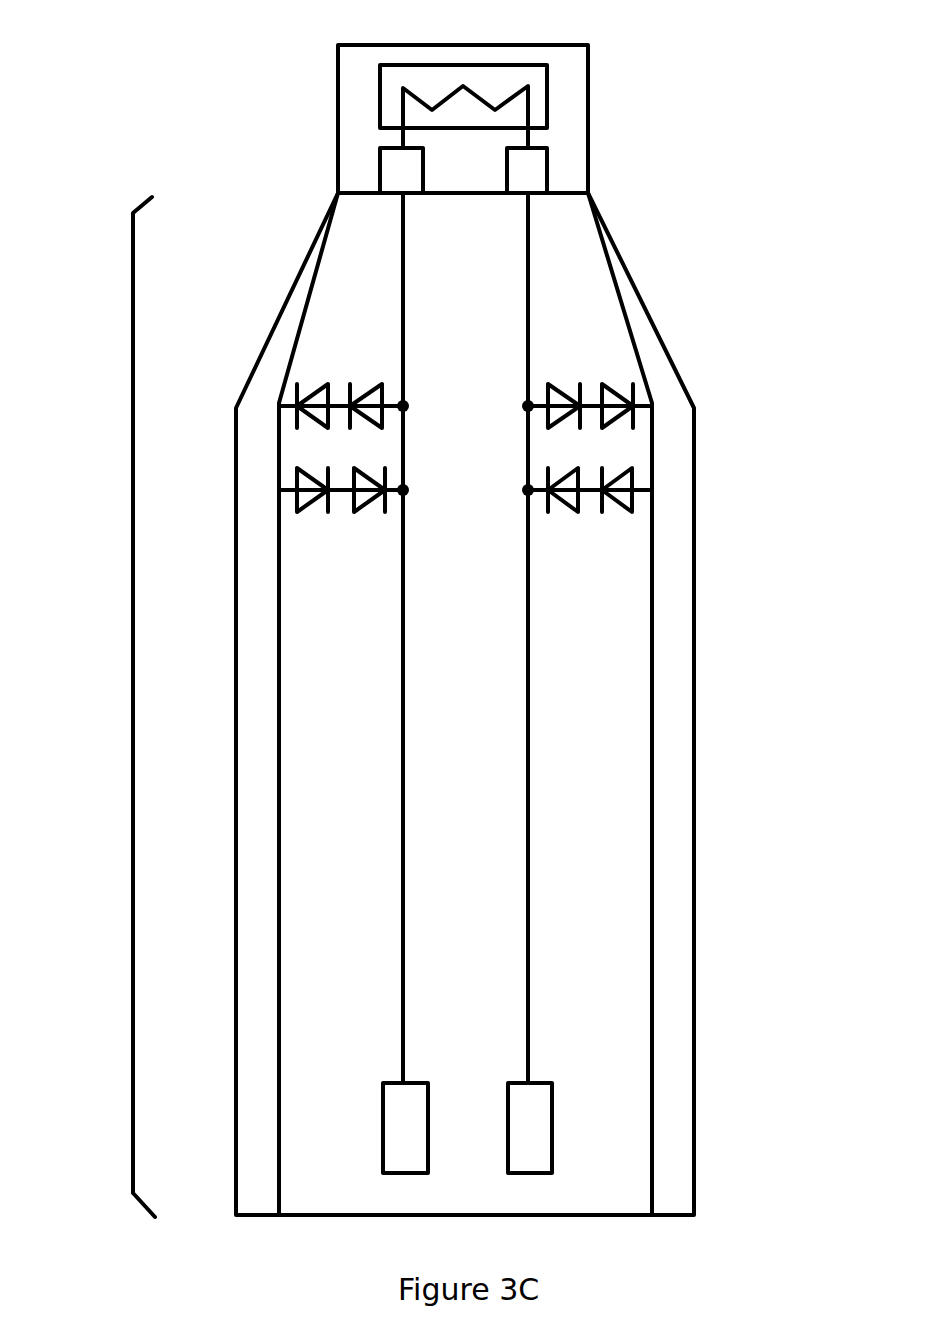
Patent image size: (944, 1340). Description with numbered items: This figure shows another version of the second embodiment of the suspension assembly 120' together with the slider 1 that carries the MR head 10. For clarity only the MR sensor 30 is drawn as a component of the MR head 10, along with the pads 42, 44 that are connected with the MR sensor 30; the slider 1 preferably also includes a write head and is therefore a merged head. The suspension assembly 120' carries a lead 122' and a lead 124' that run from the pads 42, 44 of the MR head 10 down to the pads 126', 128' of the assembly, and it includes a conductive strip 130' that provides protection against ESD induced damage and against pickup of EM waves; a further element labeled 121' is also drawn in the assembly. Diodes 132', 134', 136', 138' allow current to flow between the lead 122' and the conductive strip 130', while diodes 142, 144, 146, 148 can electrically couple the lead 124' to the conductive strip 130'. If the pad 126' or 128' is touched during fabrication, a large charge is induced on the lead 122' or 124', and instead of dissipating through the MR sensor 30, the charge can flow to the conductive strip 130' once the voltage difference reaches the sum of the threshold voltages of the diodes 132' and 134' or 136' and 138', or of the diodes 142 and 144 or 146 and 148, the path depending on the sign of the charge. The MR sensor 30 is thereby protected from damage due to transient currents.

The slider 1 is at (590, 83).
The MR head 10 is at (460, 63).
The MR sensor 30 is at (382, 108).
The pad 42 is at (382, 172).
The pad 44 is at (547, 172).
The suspension assembly 120' is at (100, 707).
The inner insulating sheath 121' is at (535, 704).
The lead 122' is at (289, 638).
The lead 124' is at (646, 638).
The pad 126' is at (299, 1123).
The pad 128' is at (639, 1111).
The conductive strip 130' is at (470, 704).
The diode 132' is at (237, 379).
The diode 134' is at (265, 336).
The diode 136' is at (237, 520).
The diode 138' is at (266, 562).
The diode 142 is at (607, 380).
The diode 144 is at (548, 380).
The diode 146 is at (632, 513).
The diode 148 is at (578, 513).